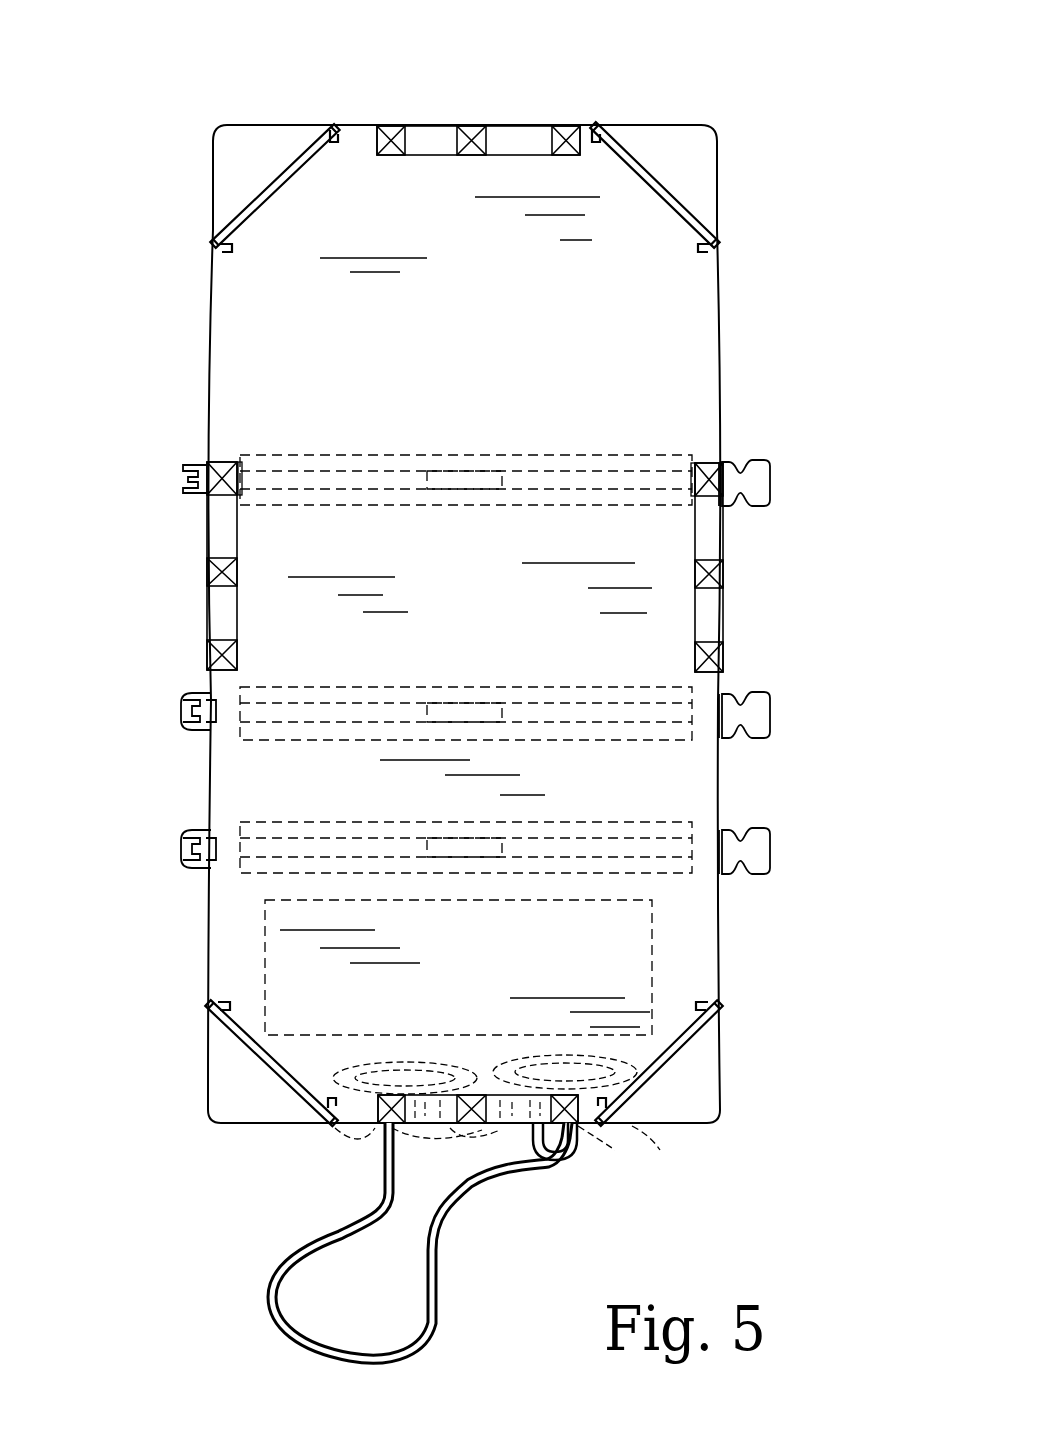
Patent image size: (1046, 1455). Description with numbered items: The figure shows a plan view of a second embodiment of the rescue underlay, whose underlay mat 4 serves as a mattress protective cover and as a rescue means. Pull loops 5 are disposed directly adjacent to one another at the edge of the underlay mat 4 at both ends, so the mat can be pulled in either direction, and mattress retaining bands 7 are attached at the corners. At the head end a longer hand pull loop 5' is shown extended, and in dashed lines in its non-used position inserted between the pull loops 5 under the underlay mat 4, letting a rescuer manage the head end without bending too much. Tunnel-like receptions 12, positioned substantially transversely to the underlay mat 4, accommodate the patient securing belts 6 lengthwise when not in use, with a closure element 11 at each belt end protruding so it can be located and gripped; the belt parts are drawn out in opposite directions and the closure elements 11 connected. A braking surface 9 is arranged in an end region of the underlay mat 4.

The underlay mat 4 is at (183, 168).
The pull loop 5 is at (466, 644).
The hand pull loop 5' is at (353, 1241).
The patient securing belt 6 is at (280, 477).
The mattress retaining band 7 is at (298, 153).
The braking surface 9 is at (603, 948).
The closure element 11 is at (183, 477).
The tunnel-like reception 12 is at (577, 457).